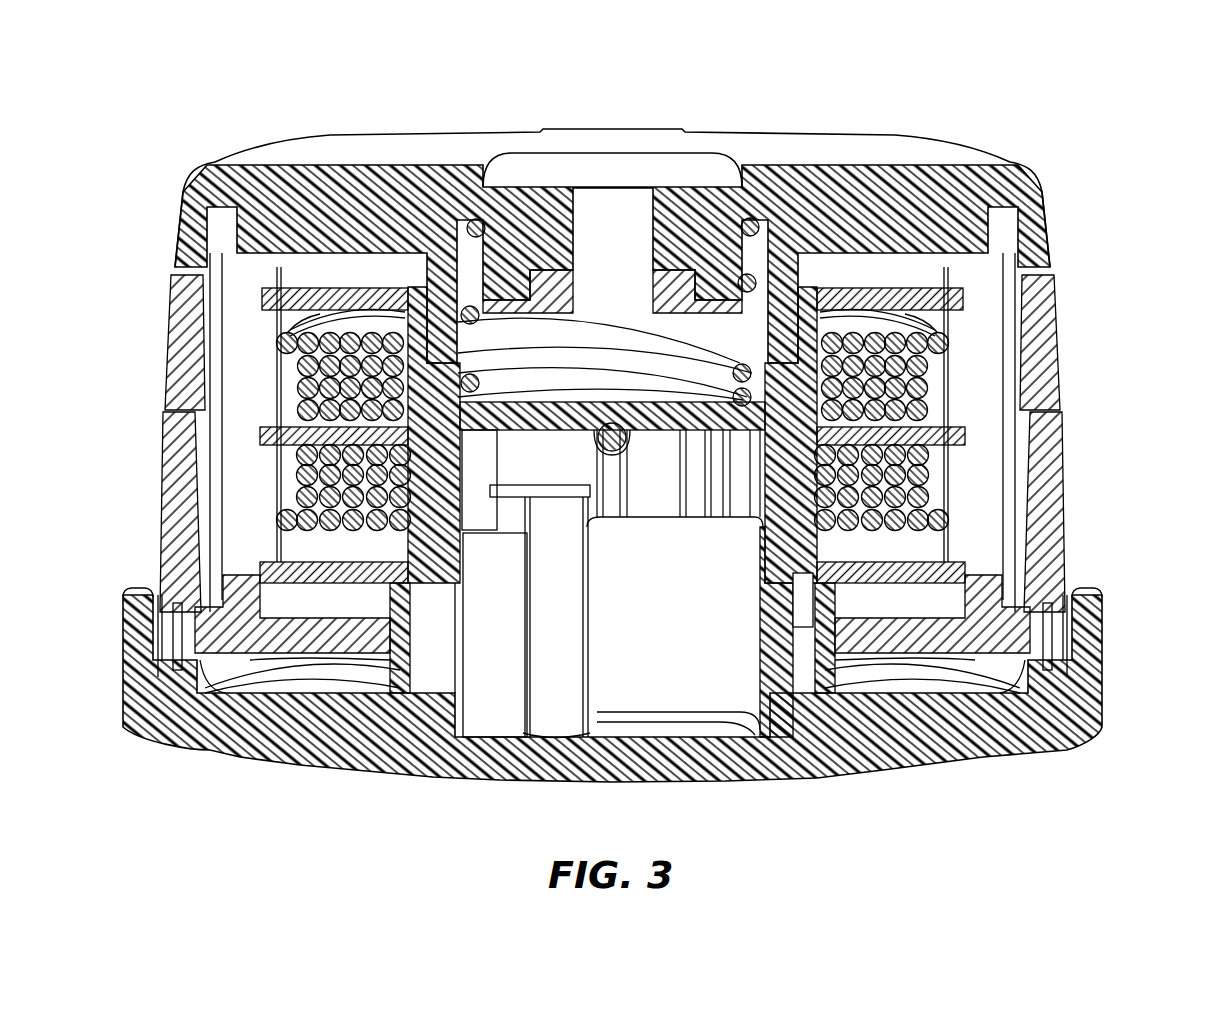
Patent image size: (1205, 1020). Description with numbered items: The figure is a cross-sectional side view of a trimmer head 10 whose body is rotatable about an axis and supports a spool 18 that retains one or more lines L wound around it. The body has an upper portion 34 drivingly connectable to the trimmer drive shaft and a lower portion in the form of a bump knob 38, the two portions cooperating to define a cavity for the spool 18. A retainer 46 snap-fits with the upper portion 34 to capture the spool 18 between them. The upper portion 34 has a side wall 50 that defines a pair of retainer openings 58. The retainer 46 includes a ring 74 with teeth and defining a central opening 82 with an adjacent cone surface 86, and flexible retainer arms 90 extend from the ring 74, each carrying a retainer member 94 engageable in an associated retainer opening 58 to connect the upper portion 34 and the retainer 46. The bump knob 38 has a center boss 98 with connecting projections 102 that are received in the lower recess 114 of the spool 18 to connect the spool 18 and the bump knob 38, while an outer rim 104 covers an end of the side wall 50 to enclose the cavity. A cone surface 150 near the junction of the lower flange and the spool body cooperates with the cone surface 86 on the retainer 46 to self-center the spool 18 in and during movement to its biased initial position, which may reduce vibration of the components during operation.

The trimmer head 10 is at (128, 96).
The spool 18 is at (412, 300).
The upper portion 34 is at (908, 200).
The bump knob 38 is at (197, 722).
The retainer 46 is at (190, 575).
The side wall 50 is at (1060, 565).
The retainer openings 58 is at (146, 262).
The ring 74 is at (1010, 635).
The central opening 82 is at (825, 645).
The cone surface 86 is at (800, 557).
The flexible retainer arms 90 is at (175, 497).
The retainer member 94 is at (165, 325).
The center boss 98 is at (462, 577).
The connecting projections 102 is at (560, 625).
The outer rim 104 is at (1100, 655).
The lower recess 114 is at (778, 600).
The cone surface 150 is at (862, 650).
The line L is at (857, 345).